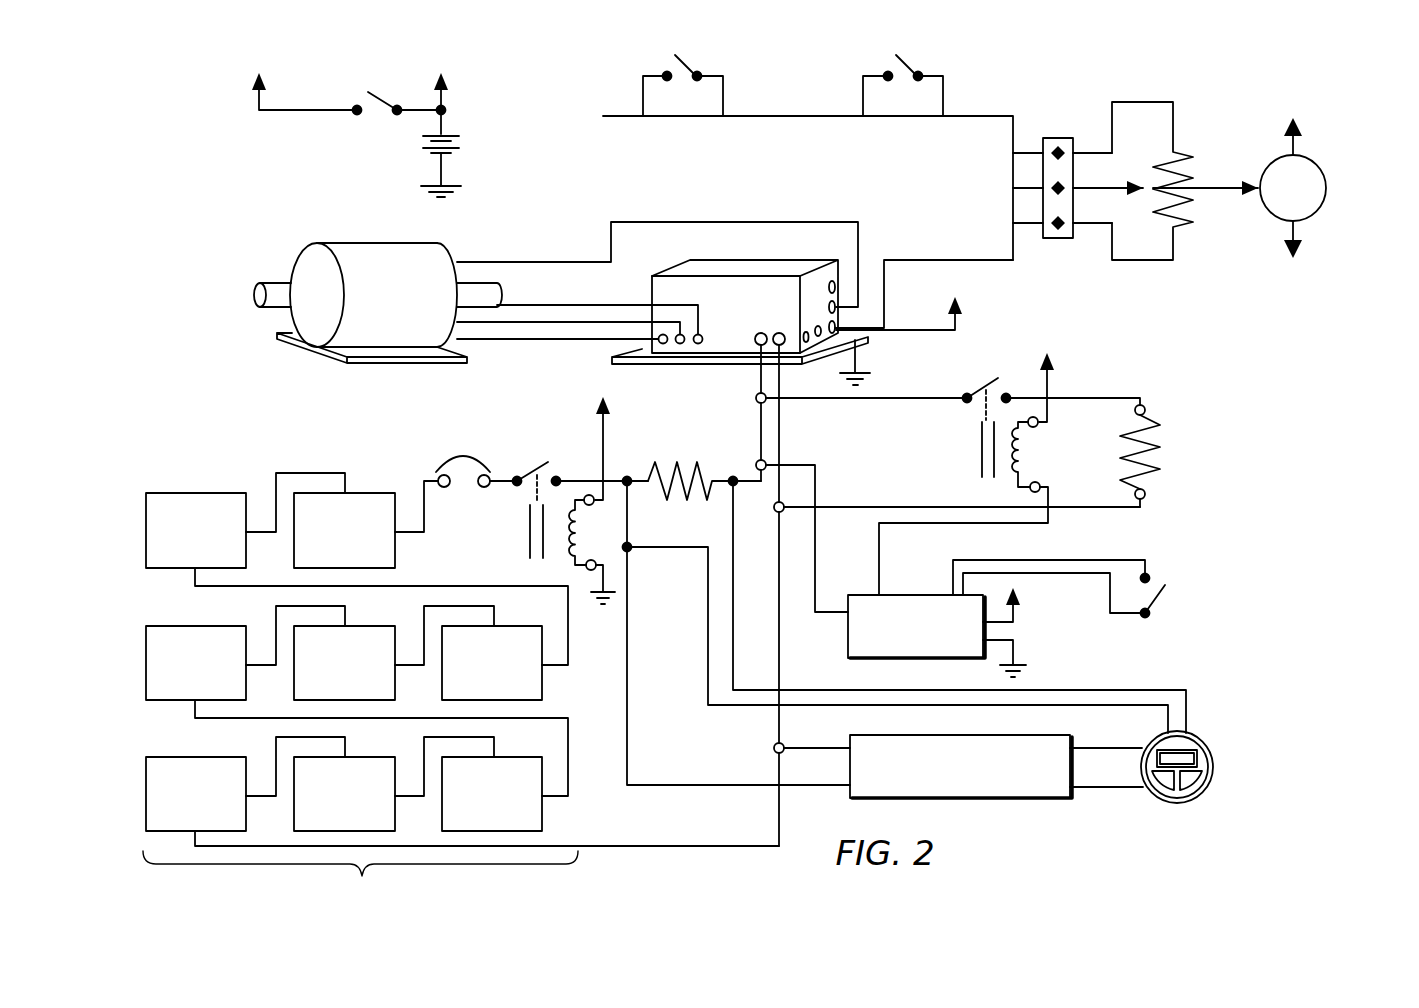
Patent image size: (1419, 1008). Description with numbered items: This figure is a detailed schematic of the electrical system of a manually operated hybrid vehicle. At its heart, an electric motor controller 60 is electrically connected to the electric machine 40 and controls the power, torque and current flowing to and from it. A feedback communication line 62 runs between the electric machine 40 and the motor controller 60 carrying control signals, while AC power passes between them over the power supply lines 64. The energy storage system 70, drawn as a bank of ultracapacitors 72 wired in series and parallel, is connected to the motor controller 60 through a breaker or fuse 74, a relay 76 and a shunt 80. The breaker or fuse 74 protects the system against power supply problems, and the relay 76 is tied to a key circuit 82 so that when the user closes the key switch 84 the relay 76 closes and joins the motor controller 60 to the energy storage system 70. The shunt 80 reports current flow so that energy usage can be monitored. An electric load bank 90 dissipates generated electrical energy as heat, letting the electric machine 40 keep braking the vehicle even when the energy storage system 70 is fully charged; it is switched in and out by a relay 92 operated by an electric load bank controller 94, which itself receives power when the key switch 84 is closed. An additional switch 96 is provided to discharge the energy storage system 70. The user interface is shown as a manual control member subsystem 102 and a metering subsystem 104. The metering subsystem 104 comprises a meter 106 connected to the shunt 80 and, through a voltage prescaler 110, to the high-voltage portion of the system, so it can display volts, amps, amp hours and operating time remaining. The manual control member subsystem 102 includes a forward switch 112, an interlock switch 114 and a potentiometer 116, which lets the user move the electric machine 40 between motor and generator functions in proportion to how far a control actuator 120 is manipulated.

The electric machine 40 is at (367, 252).
The electric motor controller 60 is at (748, 268).
The feedback communication line 62 is at (548, 262).
The power supply lines 64 is at (545, 343).
The energy storage system 70 is at (447, 688).
The ultracapacitors 72 is at (146, 531).
The breaker or fuse 74 is at (460, 458).
The relay 76 is at (530, 533).
The shunt 80 is at (678, 465).
The key circuit 82 is at (259, 99).
The key switch 84 is at (368, 92).
The electric load bank 90 is at (1165, 450).
The relay 92 is at (979, 448).
The electric load bank controller 94 is at (937, 636).
The switch 96 is at (1160, 600).
The manual control member subsystem 102 is at (1216, 121).
The metering subsystem 104 is at (1158, 793).
The meter 106 is at (1205, 763).
The voltage prescaler 110 is at (996, 766).
The forward switch 112 is at (692, 67).
The interlock switch 114 is at (914, 66).
The potentiometer 116 is at (1143, 262).
The control actuator 120 is at (1320, 190).